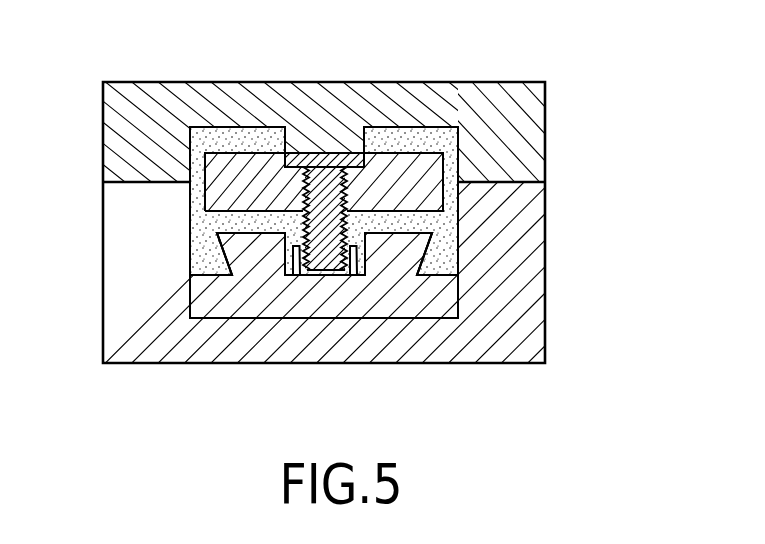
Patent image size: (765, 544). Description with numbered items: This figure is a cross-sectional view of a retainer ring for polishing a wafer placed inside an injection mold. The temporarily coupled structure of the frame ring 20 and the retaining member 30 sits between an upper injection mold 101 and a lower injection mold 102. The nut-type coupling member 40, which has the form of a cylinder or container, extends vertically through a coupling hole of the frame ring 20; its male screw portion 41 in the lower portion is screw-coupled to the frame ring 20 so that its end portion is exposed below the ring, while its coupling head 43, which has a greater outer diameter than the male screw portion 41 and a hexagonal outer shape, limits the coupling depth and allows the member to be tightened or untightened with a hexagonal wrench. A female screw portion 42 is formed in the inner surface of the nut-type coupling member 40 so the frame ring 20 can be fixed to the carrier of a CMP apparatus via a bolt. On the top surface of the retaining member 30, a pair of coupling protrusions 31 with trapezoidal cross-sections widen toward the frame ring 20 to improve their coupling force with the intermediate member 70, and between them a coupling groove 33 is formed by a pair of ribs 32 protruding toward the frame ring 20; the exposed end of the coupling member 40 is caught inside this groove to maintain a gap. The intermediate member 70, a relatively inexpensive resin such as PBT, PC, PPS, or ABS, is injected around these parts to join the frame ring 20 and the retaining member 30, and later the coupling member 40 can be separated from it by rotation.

The injection mold 101 is at (547, 123).
The injection mold 102 is at (546, 260).
The frame ring 20 is at (249, 133).
The male screw portion 41 is at (205, 212).
The nut-type coupling member 40 is at (346, 122).
The female screw portion 42 is at (332, 153).
The coupling head 43 is at (375, 150).
The intermediate member 70 is at (302, 178).
The retaining member 30 is at (228, 334).
The coupling protrusion 31 is at (237, 250).
The rib 32 is at (293, 262).
The coupling groove 33 is at (348, 257).